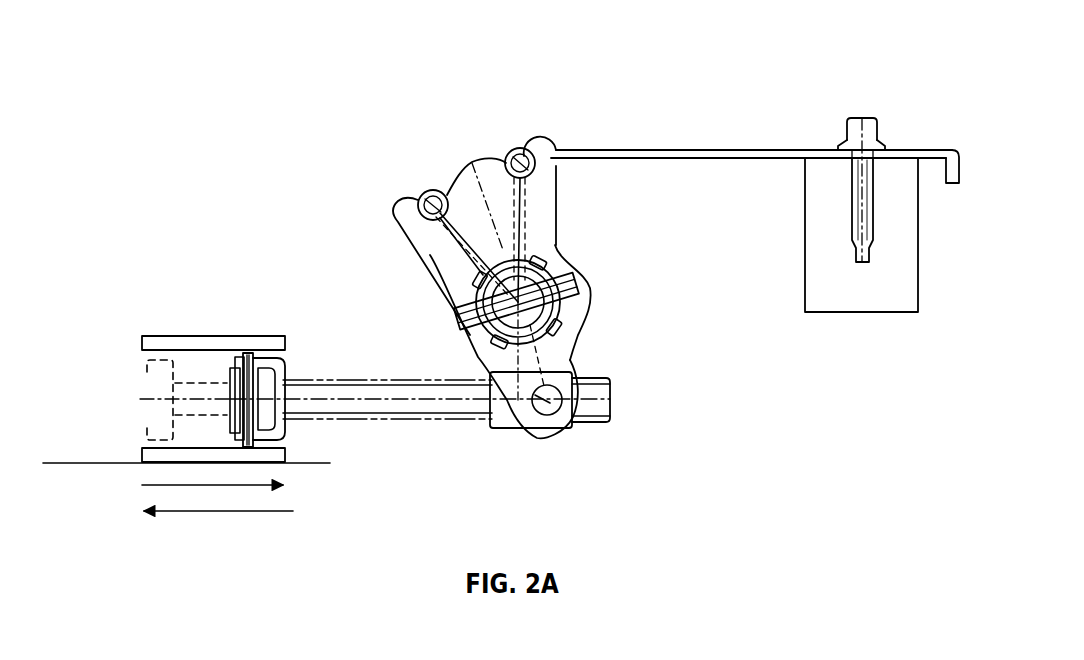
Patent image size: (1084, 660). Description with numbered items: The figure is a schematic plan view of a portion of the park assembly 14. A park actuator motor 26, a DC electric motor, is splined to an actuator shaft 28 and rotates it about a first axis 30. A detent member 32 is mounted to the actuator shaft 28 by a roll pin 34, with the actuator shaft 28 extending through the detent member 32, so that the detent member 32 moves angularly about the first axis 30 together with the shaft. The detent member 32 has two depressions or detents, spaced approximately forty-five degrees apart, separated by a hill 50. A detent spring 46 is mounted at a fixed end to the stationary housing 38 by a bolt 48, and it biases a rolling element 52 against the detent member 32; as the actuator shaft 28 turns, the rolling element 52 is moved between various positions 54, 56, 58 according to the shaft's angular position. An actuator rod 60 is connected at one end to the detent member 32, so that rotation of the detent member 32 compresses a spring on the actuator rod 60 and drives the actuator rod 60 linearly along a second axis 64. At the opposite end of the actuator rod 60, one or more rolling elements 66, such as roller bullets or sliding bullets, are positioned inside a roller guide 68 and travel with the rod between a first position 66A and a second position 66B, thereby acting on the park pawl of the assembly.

The park assembly 14 is at (306, 230).
The park actuator motor 26 is at (555, 255).
The actuator shaft 28 is at (562, 318).
The first axis 30 is at (470, 290).
The detent member 32 is at (576, 347).
The roll pin 34 is at (582, 288).
The stationary housing 38 is at (860, 312).
The detent spring 46 is at (700, 150).
The bolt 48 is at (858, 118).
The hill 50 is at (472, 162).
The rolling element 52 is at (523, 146).
The position 54 is at (543, 170).
The position 56 is at (440, 192).
The position 58 is at (420, 203).
The actuator rod 60 is at (403, 414).
The second axis 64 is at (400, 400).
The rolling elements 66 is at (248, 353).
The first position 66A is at (285, 437).
The second position 66B is at (158, 370).
The roller guide 68 is at (152, 336).